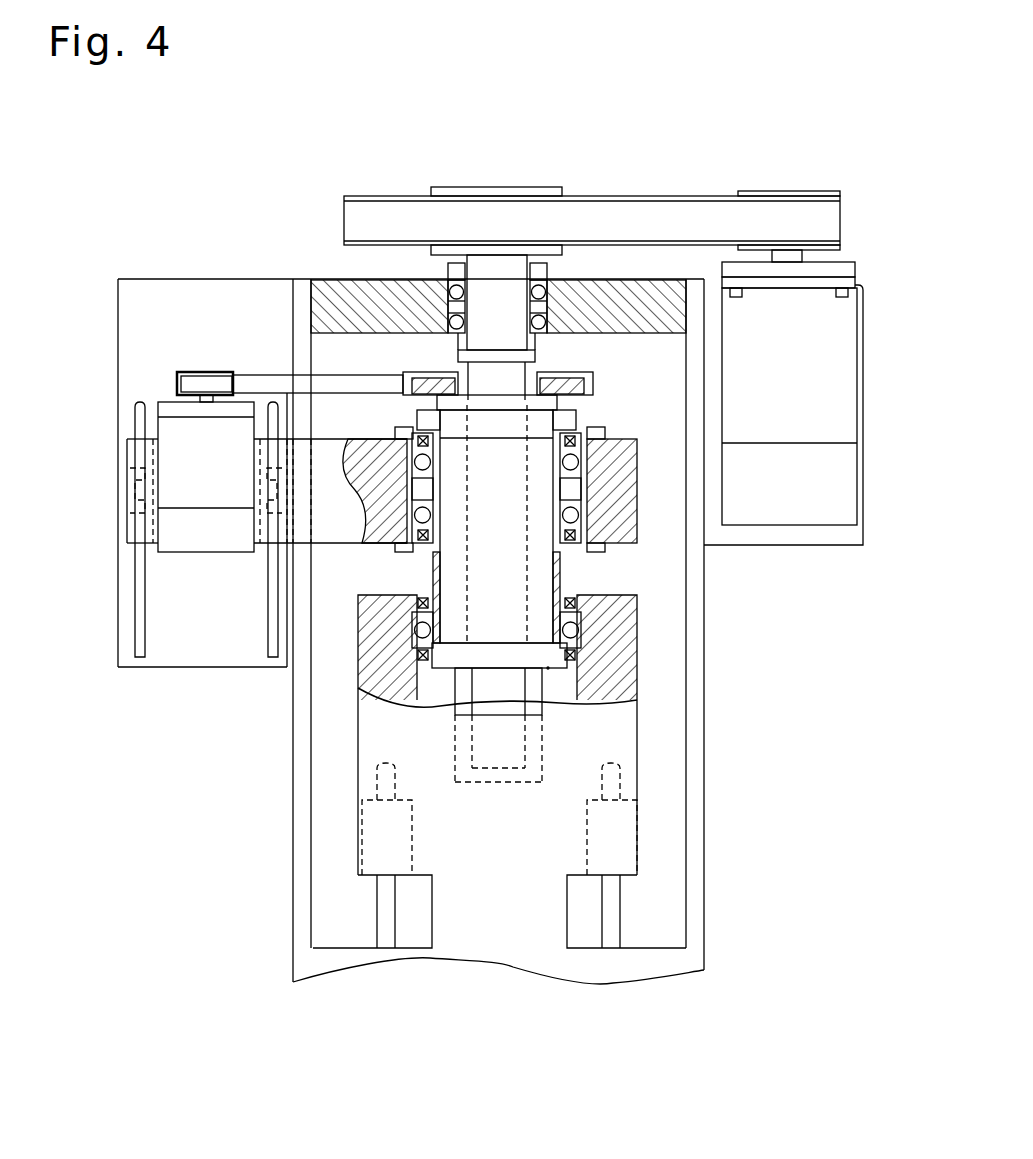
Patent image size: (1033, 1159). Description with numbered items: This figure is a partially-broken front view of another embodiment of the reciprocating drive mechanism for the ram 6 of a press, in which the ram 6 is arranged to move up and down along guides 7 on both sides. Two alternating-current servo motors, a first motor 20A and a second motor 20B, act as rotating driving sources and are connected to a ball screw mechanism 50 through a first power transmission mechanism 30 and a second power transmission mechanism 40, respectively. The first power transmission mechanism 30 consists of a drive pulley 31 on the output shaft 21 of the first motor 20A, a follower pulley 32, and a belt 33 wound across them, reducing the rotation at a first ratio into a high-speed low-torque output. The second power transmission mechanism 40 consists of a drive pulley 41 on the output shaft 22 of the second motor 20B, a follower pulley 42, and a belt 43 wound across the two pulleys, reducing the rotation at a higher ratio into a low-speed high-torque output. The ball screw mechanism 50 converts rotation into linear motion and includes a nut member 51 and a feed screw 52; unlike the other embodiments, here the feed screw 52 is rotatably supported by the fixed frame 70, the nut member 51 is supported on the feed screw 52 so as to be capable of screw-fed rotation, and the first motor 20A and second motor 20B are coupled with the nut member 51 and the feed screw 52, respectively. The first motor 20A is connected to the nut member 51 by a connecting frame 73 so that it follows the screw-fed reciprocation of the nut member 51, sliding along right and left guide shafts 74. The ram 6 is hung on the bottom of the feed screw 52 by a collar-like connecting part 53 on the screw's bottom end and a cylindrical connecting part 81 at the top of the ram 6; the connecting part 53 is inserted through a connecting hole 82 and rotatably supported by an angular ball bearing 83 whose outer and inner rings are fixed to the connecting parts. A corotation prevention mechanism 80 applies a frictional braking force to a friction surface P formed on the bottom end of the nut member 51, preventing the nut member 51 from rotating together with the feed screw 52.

The ram 6 is at (567, 790).
The guides 7 is at (383, 917).
The first motor 20A is at (223, 540).
The second motor 20B is at (818, 513).
The output shaft 21 is at (183, 397).
The output shaft 22 is at (803, 253).
The first power transmission mechanism 30 is at (418, 294).
The drive pulley 31 is at (185, 372).
The follower pulley 32 is at (593, 384).
The belt 33 is at (283, 383).
The second power transmission mechanism 40 is at (644, 188).
The drive pulley 41 is at (808, 192).
The follower pulley 42 is at (588, 192).
The belt 43 is at (668, 205).
The ball screw mechanism 50 is at (450, 648).
The nut member 51 is at (478, 627).
The feed screw 52 is at (455, 670).
The connecting part 53 is at (555, 658).
The fixed frame 70 is at (331, 290).
The connecting frame 73 is at (343, 530).
The guide shafts 74 is at (140, 655).
The corotation prevention mechanism 80 is at (565, 558).
The connecting part 81 is at (630, 605).
The connecting hole 82 is at (588, 628).
The bearing 83 is at (415, 615).
The friction surface P is at (548, 668).